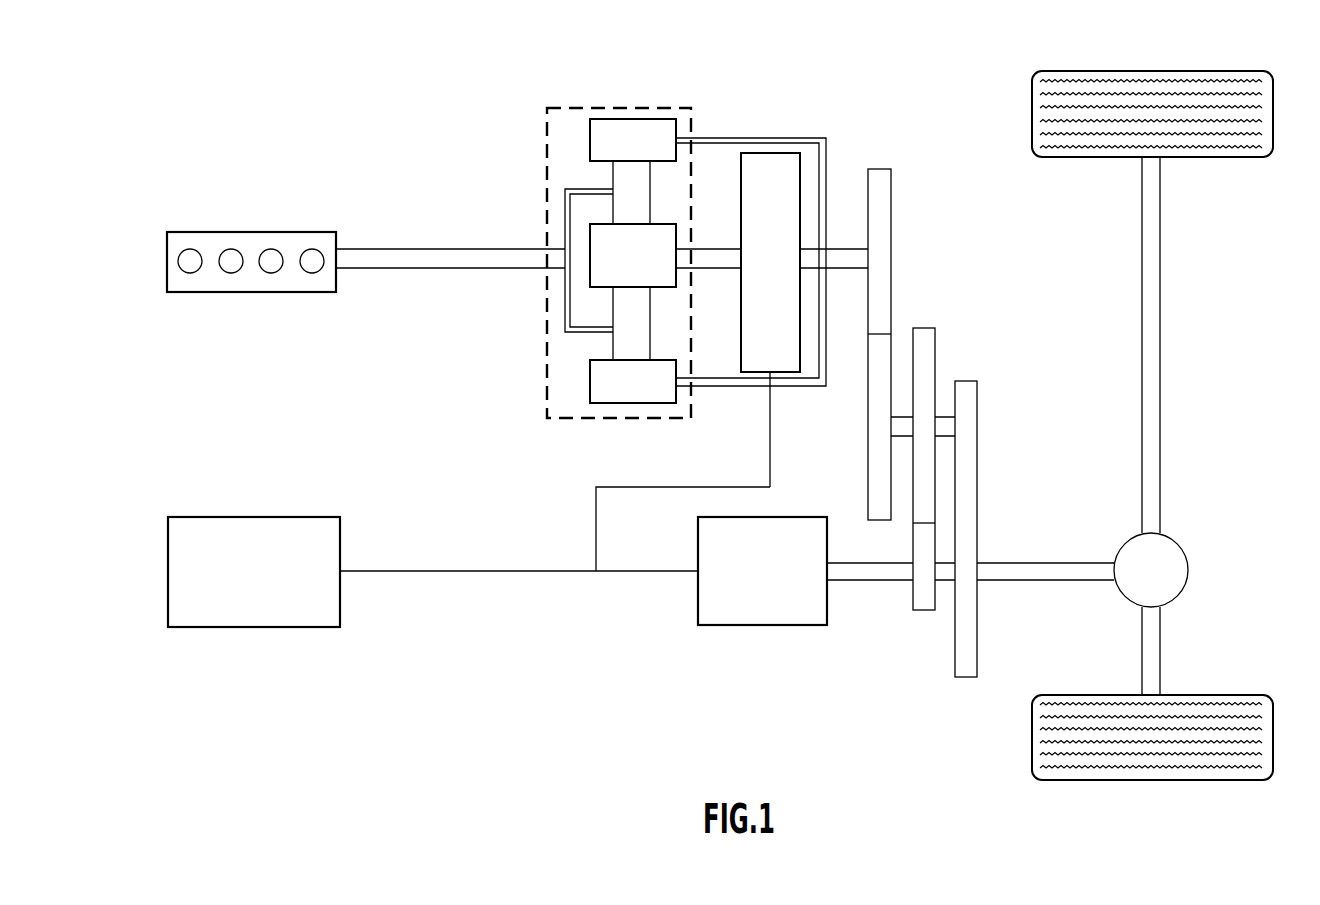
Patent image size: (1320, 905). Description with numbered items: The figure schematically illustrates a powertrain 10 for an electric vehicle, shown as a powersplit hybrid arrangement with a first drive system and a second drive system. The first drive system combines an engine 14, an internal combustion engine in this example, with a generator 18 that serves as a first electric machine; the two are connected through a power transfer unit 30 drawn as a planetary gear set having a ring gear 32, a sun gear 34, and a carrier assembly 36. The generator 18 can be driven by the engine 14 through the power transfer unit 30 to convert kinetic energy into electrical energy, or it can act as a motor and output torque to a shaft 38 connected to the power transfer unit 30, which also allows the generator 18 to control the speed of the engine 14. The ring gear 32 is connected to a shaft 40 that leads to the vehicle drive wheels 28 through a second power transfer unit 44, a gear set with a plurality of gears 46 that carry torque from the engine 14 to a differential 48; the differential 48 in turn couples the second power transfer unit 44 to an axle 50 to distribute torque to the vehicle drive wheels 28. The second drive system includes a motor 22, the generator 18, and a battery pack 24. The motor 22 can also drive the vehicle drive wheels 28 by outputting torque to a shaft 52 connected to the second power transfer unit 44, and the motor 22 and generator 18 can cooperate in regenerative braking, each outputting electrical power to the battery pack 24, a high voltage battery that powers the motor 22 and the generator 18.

The powertrain 10 is at (398, 138).
The engine 14 is at (184, 232).
The generator 18 is at (750, 153).
The motor 22 is at (828, 610).
The battery pack 24 is at (184, 517).
The vehicle drive wheels 28 is at (1273, 737).
The power transfer unit 30 is at (542, 377).
The ring gear 32 is at (590, 137).
The sun gear 34 is at (590, 233).
The carrier assembly 36 is at (566, 316).
The shaft 38 is at (708, 249).
The shaft 40 is at (847, 248).
The second power transfer unit 44 is at (955, 297).
The gears 46 is at (935, 350).
The differential 48 is at (1183, 590).
The axle 50 is at (1160, 335).
The shaft 52 is at (882, 580).